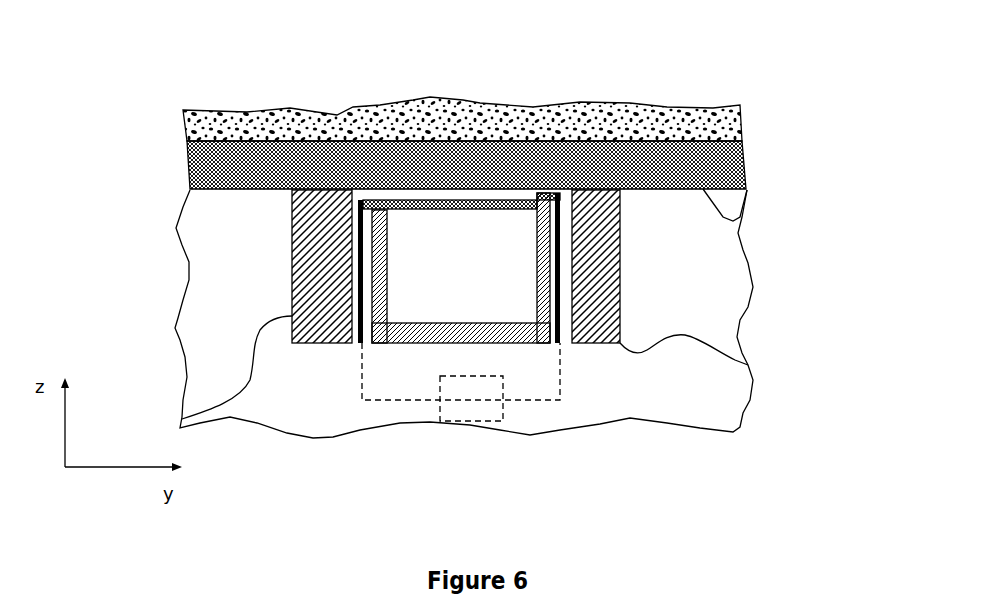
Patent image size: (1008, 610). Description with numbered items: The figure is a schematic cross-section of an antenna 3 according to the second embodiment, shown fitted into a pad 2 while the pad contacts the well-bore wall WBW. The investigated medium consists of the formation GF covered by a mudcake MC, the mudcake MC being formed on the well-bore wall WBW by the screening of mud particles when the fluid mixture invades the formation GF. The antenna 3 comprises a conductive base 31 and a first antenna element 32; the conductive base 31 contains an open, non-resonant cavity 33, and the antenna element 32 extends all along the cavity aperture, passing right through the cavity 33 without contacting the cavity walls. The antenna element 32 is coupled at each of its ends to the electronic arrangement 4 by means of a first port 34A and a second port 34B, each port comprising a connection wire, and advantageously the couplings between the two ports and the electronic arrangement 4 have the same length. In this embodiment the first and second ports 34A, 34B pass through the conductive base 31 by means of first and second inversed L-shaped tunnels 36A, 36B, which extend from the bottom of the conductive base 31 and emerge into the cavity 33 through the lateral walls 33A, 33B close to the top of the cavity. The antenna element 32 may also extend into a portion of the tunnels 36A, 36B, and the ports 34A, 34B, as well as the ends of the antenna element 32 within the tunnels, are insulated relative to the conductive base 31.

The pad 2 is at (727, 323).
The antenna 3 is at (336, 365).
The electronic arrangement 4 is at (495, 410).
The conductive base 31 is at (292, 270).
The first antenna element 32 is at (481, 201).
The cavity 33 is at (463, 298).
The lateral wall 33A is at (387, 237).
The lateral wall 33B is at (537, 245).
The first port 34A is at (358, 225).
The second port 34B is at (560, 245).
The first inversed L-shaped tunnel 36A is at (182, 419).
The second inversed L-shaped tunnel 36B is at (748, 365).
The formation GF is at (462, 119).
The mudcake MC is at (466, 165).
The well-bore wall WBW is at (738, 220).